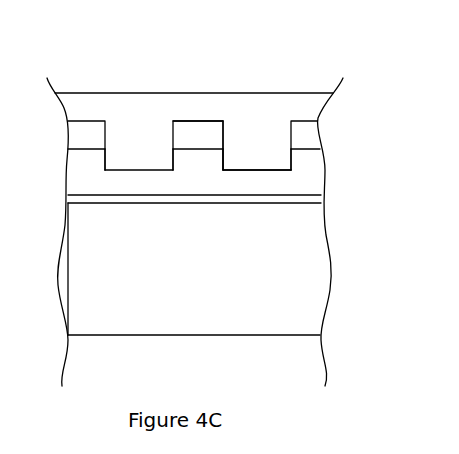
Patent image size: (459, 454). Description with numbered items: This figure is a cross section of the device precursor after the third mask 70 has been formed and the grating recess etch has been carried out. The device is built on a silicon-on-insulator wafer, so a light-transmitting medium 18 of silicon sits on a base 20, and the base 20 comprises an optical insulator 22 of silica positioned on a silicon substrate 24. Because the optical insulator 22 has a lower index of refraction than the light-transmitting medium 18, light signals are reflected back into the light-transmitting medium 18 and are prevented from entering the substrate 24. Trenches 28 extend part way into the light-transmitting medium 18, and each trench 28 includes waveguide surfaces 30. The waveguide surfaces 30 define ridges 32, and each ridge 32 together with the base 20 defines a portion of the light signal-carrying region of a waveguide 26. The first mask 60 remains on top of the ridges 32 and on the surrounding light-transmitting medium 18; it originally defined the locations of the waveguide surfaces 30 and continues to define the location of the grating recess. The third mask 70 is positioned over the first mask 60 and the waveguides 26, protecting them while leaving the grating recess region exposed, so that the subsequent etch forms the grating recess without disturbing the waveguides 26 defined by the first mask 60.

The third mask 70 is at (135, 108).
The first mask 60 is at (80, 137).
The light-transmitting medium 18 is at (80, 170).
The ridge 32 is at (217, 150).
The trench 28 is at (122, 170).
The waveguide surface 30 is at (172, 153).
The waveguide 26 is at (233, 127).
The optical insulator 22 is at (116, 197).
The substrate 24 is at (104, 305).
The base 20 is at (50, 193).